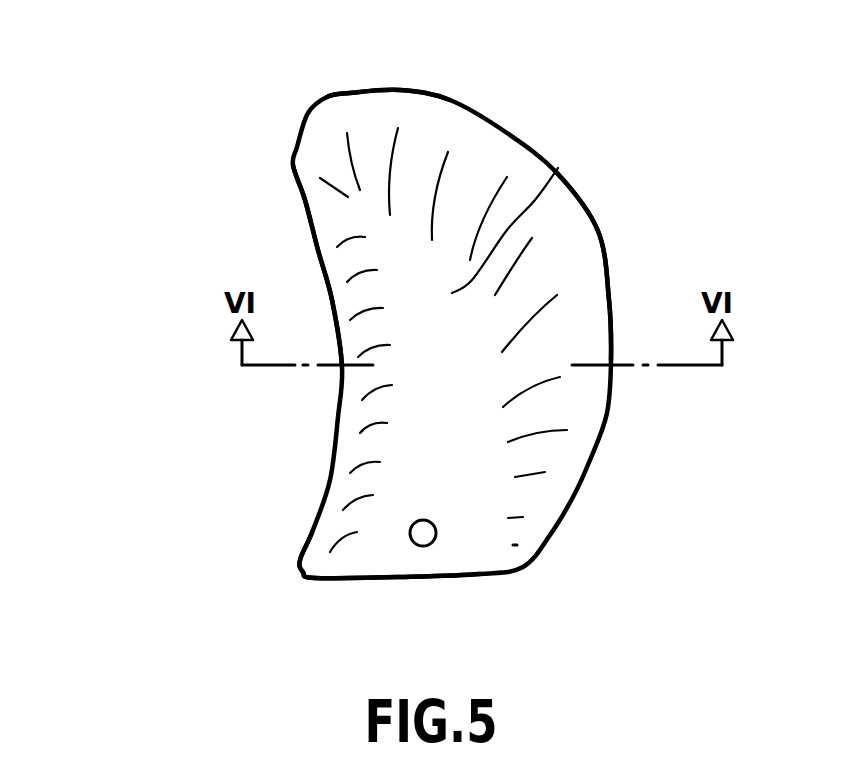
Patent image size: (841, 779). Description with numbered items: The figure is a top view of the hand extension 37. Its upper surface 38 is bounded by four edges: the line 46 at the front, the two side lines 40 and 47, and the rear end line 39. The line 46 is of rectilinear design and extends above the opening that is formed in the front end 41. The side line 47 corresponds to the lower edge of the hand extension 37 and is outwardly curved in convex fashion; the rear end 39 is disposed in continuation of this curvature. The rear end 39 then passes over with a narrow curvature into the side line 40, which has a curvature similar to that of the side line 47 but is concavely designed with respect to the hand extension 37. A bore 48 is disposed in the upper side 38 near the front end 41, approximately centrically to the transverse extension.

The hand extension 37 is at (610, 208).
The surface 38 is at (558, 168).
The rear end line 39 is at (344, 90).
The side line 40 is at (314, 247).
The front end 41 is at (316, 588).
The line 46 is at (390, 580).
The side line 47 is at (613, 280).
The bore 48 is at (425, 539).